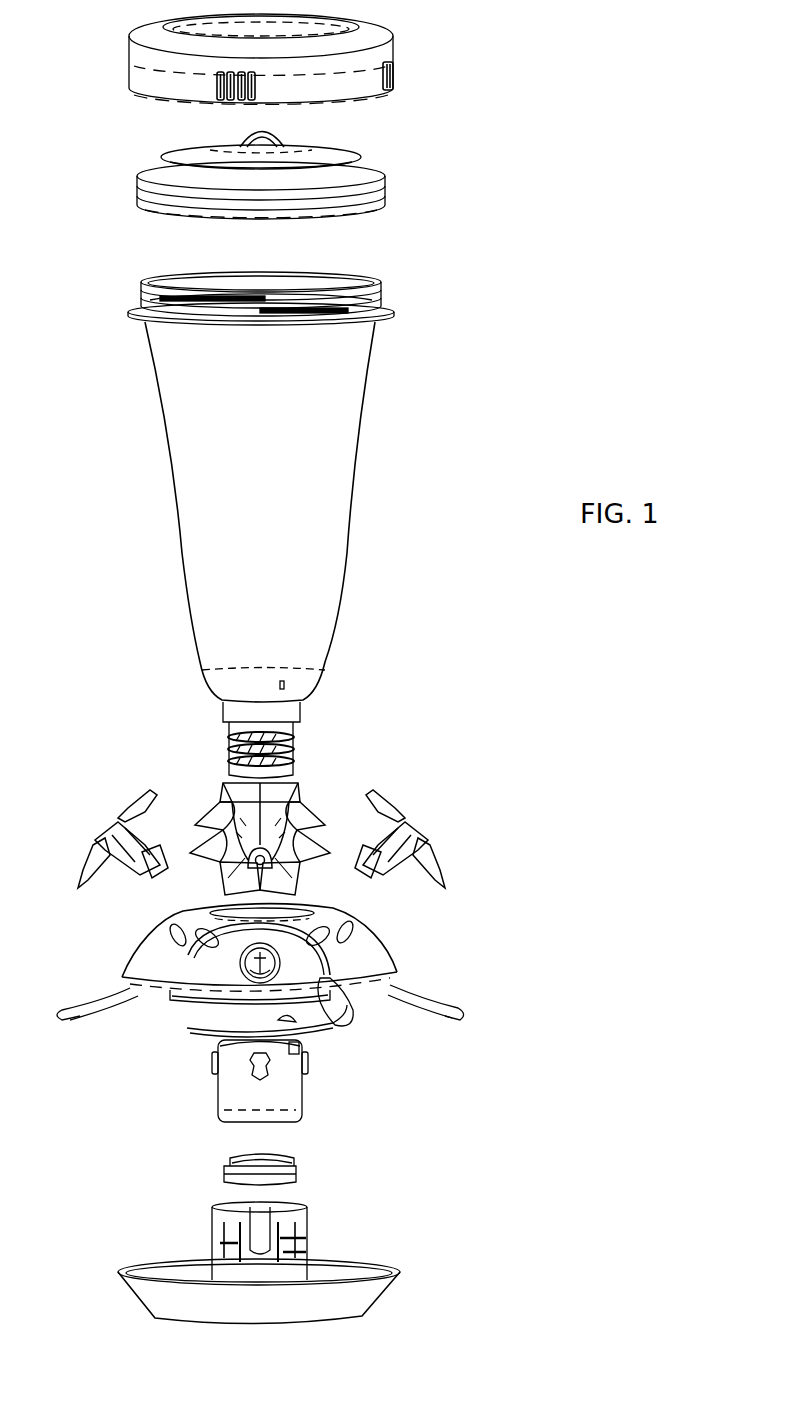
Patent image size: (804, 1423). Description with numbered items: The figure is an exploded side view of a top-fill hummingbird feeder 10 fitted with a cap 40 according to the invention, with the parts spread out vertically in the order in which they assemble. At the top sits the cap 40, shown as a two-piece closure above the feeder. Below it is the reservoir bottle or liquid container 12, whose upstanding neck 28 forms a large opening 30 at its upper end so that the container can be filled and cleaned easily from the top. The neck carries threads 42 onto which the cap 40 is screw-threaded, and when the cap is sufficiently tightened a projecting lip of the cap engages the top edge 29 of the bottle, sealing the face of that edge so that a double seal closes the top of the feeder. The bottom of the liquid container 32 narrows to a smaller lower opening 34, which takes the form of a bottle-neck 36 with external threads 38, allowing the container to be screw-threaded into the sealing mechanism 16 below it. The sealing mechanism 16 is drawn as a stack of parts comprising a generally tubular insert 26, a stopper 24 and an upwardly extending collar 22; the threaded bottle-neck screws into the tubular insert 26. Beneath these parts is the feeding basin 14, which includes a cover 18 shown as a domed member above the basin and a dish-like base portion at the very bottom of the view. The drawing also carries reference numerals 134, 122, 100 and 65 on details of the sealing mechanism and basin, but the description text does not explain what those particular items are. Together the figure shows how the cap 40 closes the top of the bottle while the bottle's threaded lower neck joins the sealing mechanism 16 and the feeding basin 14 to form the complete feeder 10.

The top-fill hummingbird feeder 10 is at (583, 213).
The cap 40 is at (415, 222).
The large opening 30 is at (293, 282).
The top edge 29 is at (196, 273).
The upstanding neck 28 is at (395, 300).
The threads 42 is at (140, 294).
The liquid container 12 is at (173, 445).
The bottle-neck 36 is at (222, 710).
The external threads 38 is at (298, 750).
The bottom of the liquid container 32 is at (352, 716).
The smaller lower opening 34 is at (228, 778).
The feeding basin 14 is at (400, 965).
The cover 18 is at (362, 935).
The sealing mechanism 16 is at (200, 1045).
The tubular insert 26 is at (290, 1086).
The housing seam 134 is at (296, 1112).
The valve cap 122 is at (294, 1158).
The stopper 24 is at (290, 1176).
The upwardly extending collar 22 is at (300, 1262).
The stem post 100 is at (230, 1245).
The dish 65 is at (145, 1290).